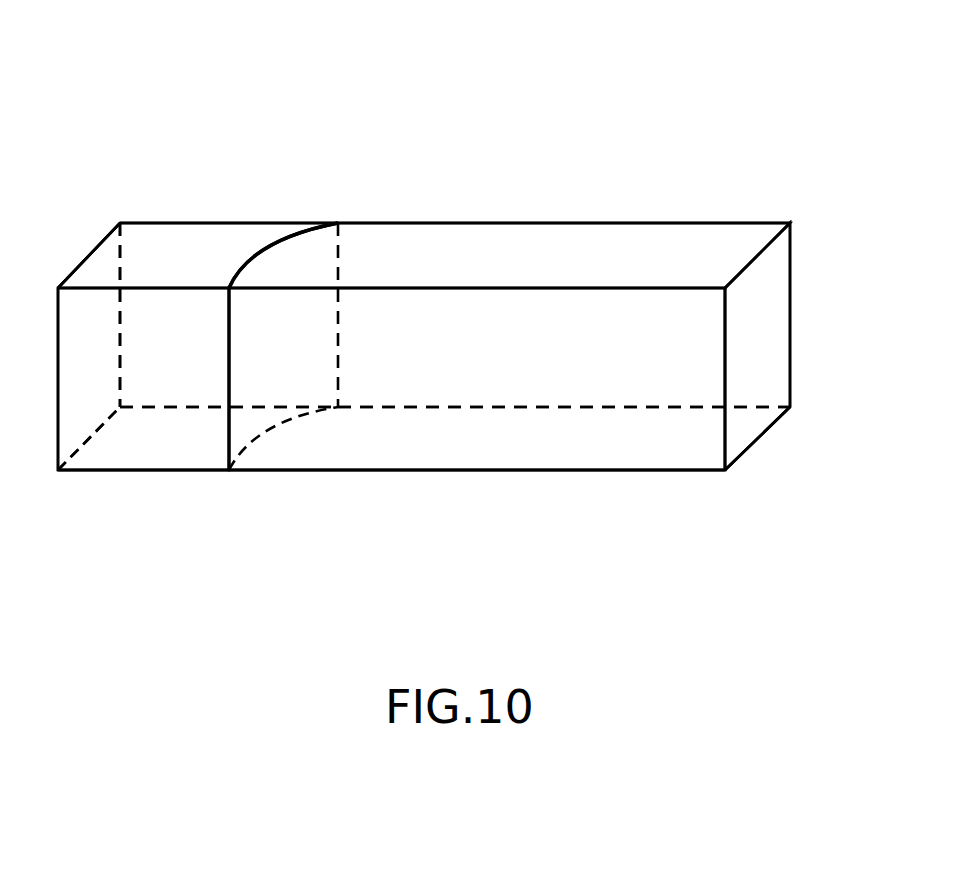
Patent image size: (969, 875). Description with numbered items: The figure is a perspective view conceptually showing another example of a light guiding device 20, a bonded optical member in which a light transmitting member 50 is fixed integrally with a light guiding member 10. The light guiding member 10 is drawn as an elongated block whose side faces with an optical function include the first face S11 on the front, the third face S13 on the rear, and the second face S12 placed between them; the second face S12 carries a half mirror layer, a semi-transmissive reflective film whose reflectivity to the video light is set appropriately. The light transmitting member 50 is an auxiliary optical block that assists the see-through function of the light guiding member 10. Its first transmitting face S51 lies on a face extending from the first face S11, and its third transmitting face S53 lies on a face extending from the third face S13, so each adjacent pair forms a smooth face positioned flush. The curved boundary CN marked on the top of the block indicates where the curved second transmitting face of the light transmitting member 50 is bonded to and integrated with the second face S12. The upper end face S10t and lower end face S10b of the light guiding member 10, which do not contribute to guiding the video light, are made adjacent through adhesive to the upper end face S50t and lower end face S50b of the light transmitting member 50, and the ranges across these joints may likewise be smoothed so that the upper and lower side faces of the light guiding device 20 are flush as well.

The light guiding member 10 is at (558, 425).
The light guiding device 20 is at (368, 158).
The light transmitting member 50 is at (173, 415).
The curved connection line CN is at (264, 247).
The upper end face S10t is at (368, 255).
The lower end face S10b is at (430, 447).
The first face S11 is at (390, 390).
The second face S12 is at (308, 333).
The third face S13 is at (594, 333).
The upper end face S50t is at (232, 250).
The lower end face S50b is at (153, 447).
The first transmitting face S51 is at (162, 383).
The third transmitting face S53 is at (180, 268).